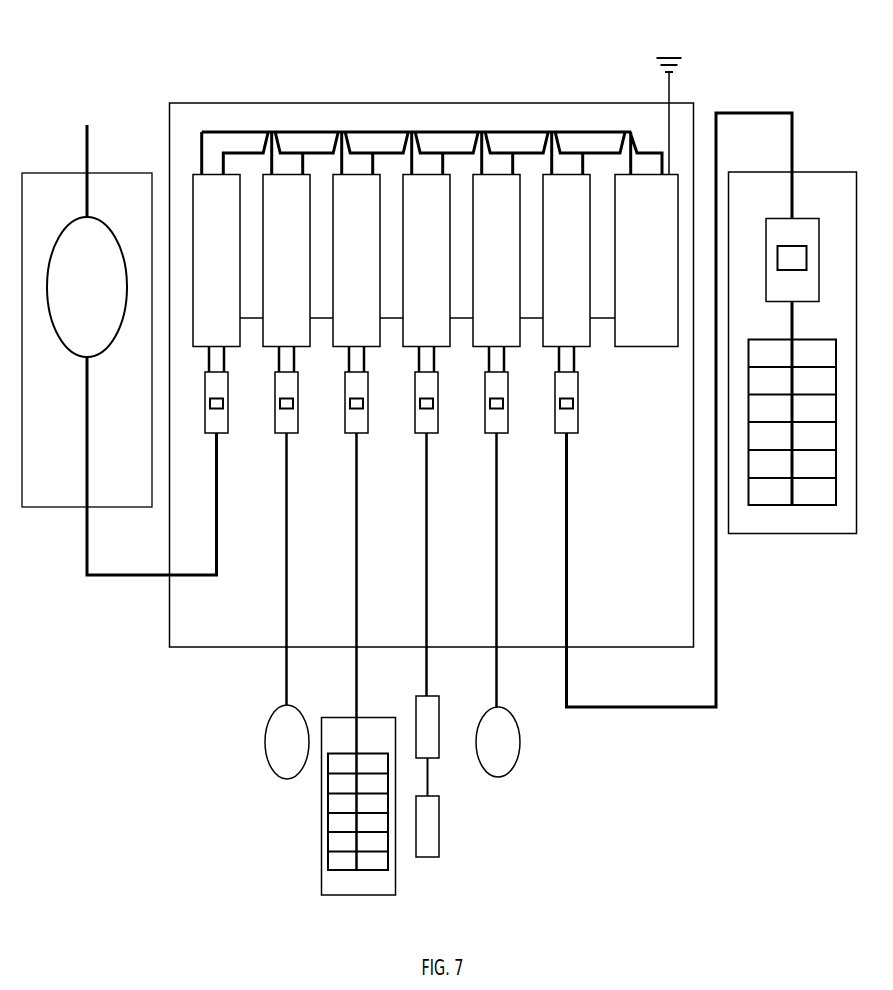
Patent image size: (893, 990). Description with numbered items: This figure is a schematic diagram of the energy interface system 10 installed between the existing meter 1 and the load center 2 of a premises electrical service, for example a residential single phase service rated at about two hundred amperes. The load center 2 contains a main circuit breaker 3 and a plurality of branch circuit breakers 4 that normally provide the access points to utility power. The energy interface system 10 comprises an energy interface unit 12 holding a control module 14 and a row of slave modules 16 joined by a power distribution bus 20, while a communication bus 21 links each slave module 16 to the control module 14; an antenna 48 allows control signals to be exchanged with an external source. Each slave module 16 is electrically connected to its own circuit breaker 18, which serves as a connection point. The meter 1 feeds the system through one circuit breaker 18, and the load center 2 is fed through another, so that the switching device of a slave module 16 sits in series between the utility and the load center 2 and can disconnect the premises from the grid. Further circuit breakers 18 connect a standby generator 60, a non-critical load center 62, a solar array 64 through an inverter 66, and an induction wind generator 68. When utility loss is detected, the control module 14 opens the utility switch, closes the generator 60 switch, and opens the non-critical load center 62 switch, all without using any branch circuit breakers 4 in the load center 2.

The meter 1 is at (52, 192).
The load center 2 is at (818, 192).
The main circuit breaker 3 is at (762, 232).
The branch circuit breakers 4 is at (803, 493).
The energy interface system 10 is at (215, 77).
The energy interface unit 12 is at (214, 650).
The control module 14 is at (646, 261).
The slave module 16 is at (391, 261).
The circuit breaker 18 is at (592, 463).
The power distribution bus 20 is at (368, 150).
The communication bus 21 is at (612, 382).
The antenna 48 is at (667, 90).
The generator 60 is at (277, 767).
The non-critical load center 62 is at (325, 878).
The solar array 64 is at (432, 847).
The inverter 66 is at (432, 747).
The induction wind generator 68 is at (503, 767).